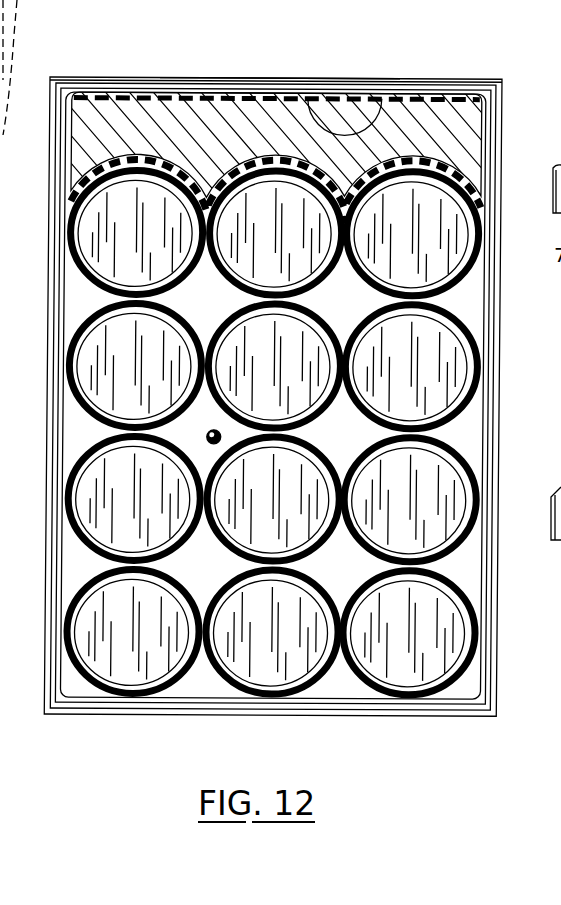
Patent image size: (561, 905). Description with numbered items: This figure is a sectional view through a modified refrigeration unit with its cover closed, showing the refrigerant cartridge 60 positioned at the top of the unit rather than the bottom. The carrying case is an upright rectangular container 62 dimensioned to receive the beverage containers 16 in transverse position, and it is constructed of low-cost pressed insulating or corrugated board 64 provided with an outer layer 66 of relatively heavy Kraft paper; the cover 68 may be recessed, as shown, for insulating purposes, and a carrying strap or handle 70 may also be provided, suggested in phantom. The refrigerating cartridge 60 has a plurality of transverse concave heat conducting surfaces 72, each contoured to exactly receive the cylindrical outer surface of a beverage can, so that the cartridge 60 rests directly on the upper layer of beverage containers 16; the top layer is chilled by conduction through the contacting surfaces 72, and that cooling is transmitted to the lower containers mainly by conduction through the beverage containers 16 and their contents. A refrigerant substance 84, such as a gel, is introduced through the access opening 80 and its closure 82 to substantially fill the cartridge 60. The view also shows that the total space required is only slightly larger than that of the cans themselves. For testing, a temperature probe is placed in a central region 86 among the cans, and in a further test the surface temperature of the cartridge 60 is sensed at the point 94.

The beverage containers 16 is at (457, 293).
The refrigerant cartridge 60 is at (72, 165).
The upright rectangular container 62 is at (487, 453).
The pressed insulating or corrugated board 64 is at (60, 212).
The outer layer 66 is at (57, 353).
The cover 68 is at (257, 78).
The carrying strap or handle 70 is at (18, 26).
The concave heat conducting surfaces 72 is at (213, 210).
The access opening 80 is at (390, 98).
The closure 82 is at (290, 117).
The refrigerant substance 84 is at (465, 105).
The central region 86 is at (211, 438).
The point 94 is at (349, 224).